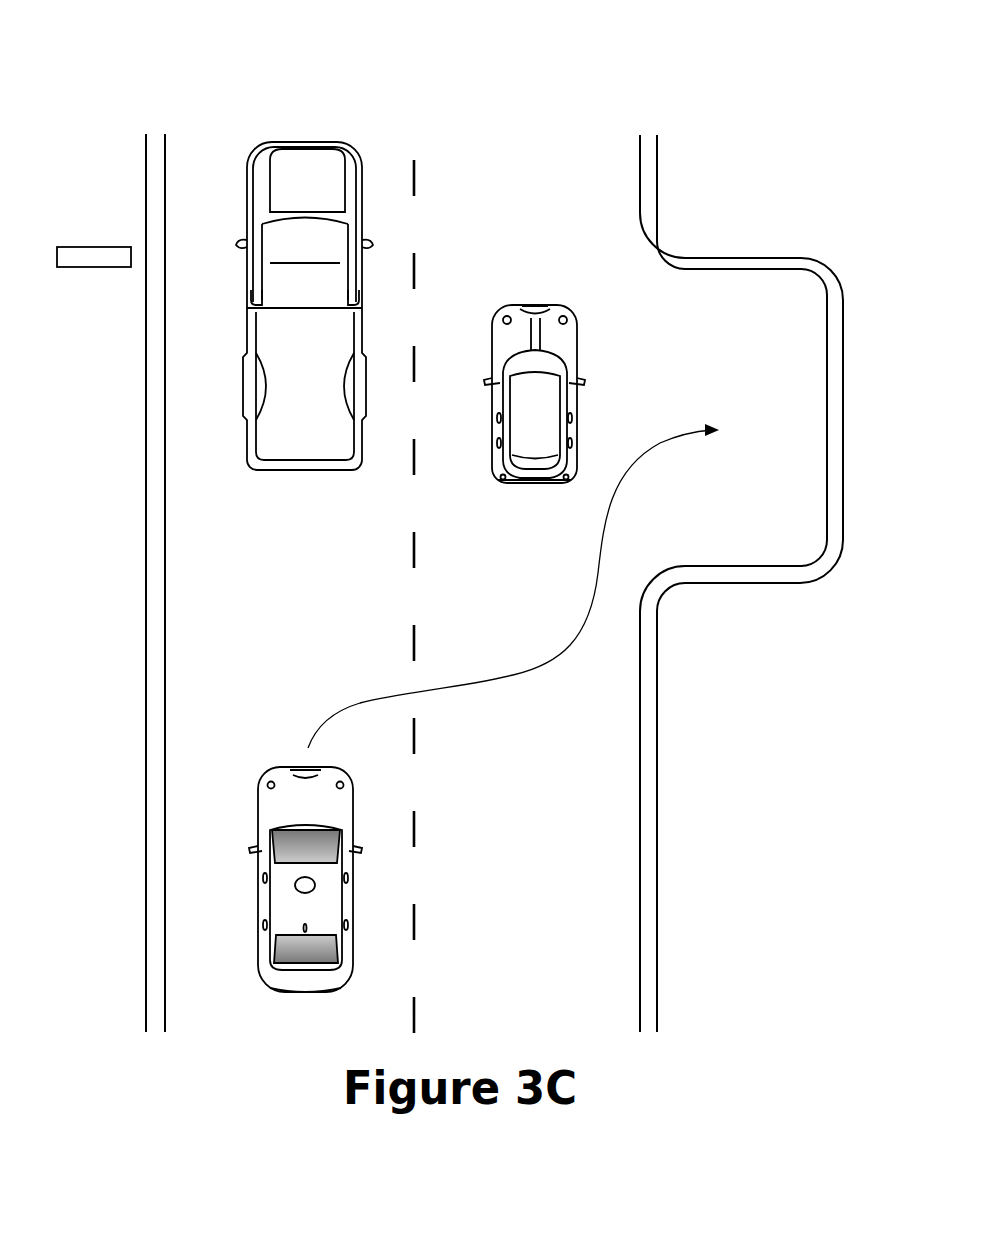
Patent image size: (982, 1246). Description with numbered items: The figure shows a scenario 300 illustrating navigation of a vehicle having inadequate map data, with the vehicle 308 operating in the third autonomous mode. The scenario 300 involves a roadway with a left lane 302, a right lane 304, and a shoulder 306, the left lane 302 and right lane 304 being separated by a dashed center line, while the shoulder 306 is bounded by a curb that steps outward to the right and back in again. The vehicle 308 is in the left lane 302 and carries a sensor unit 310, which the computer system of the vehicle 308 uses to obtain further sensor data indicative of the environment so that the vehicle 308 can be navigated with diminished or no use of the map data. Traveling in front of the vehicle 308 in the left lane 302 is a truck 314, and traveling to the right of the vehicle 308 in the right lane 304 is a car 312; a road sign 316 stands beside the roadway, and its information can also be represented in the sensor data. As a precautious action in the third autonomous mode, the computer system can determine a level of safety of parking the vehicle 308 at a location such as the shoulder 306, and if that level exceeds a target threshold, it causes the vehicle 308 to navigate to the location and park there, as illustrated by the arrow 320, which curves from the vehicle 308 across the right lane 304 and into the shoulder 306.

The scenario 300 is at (97, 118).
The left lane 302 is at (296, 94).
The right lane 304 is at (521, 94).
The shoulder 306 is at (663, 341).
The vehicle 308 is at (265, 808).
The sensor unit 310 is at (296, 891).
The car 312 is at (505, 315).
The truck 314 is at (267, 145).
The road sign 316 is at (118, 247).
The arrow 320 is at (568, 619).